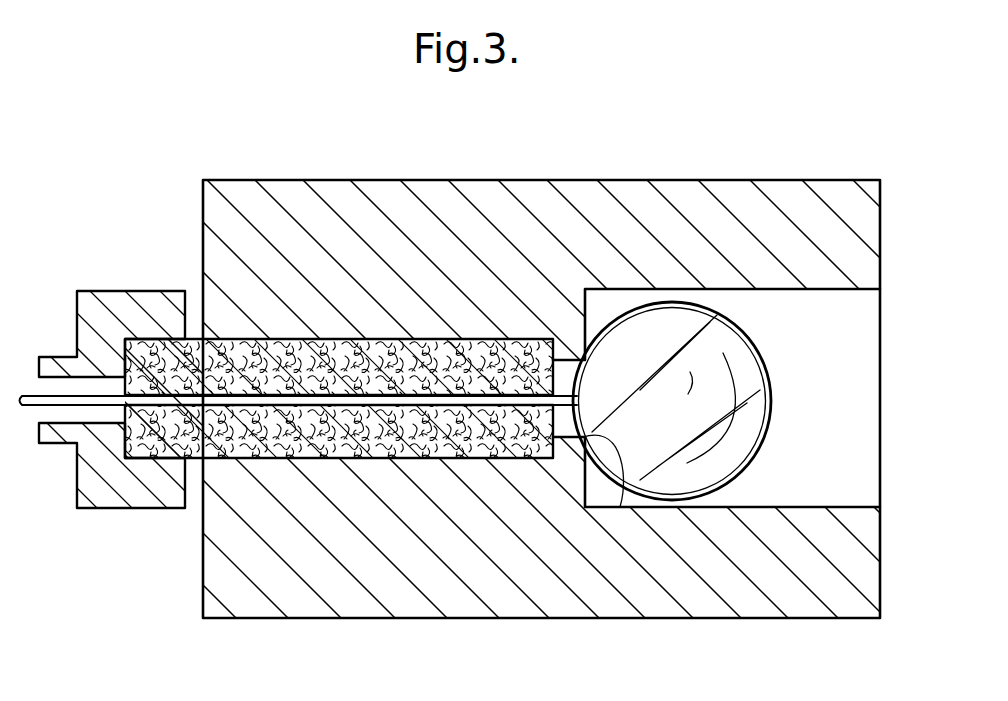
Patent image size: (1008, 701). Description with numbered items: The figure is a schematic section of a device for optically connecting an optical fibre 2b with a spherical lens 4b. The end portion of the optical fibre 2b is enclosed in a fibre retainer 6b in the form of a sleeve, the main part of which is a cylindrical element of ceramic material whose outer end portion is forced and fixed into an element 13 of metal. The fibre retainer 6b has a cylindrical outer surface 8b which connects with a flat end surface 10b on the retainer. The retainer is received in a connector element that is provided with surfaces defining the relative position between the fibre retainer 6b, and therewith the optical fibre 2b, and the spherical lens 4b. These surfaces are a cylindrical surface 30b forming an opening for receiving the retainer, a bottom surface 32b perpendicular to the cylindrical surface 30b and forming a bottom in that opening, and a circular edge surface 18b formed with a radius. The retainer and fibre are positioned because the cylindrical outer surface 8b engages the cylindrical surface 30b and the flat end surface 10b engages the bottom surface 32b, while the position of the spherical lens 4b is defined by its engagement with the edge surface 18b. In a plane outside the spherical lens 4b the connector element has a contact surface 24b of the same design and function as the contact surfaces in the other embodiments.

The optical fibre 2b is at (23, 393).
The spherical lens 4b is at (766, 412).
The fibre retainer 6b is at (151, 372).
The cylindrical outer surface 8b is at (445, 360).
The flat end surface 10b is at (593, 412).
The element of metal 13 is at (137, 487).
The circular edge surface 18b is at (580, 360).
The contact surface 24b is at (880, 587).
The cylindrical surface 30b is at (357, 343).
The bottom surface 32b is at (533, 392).